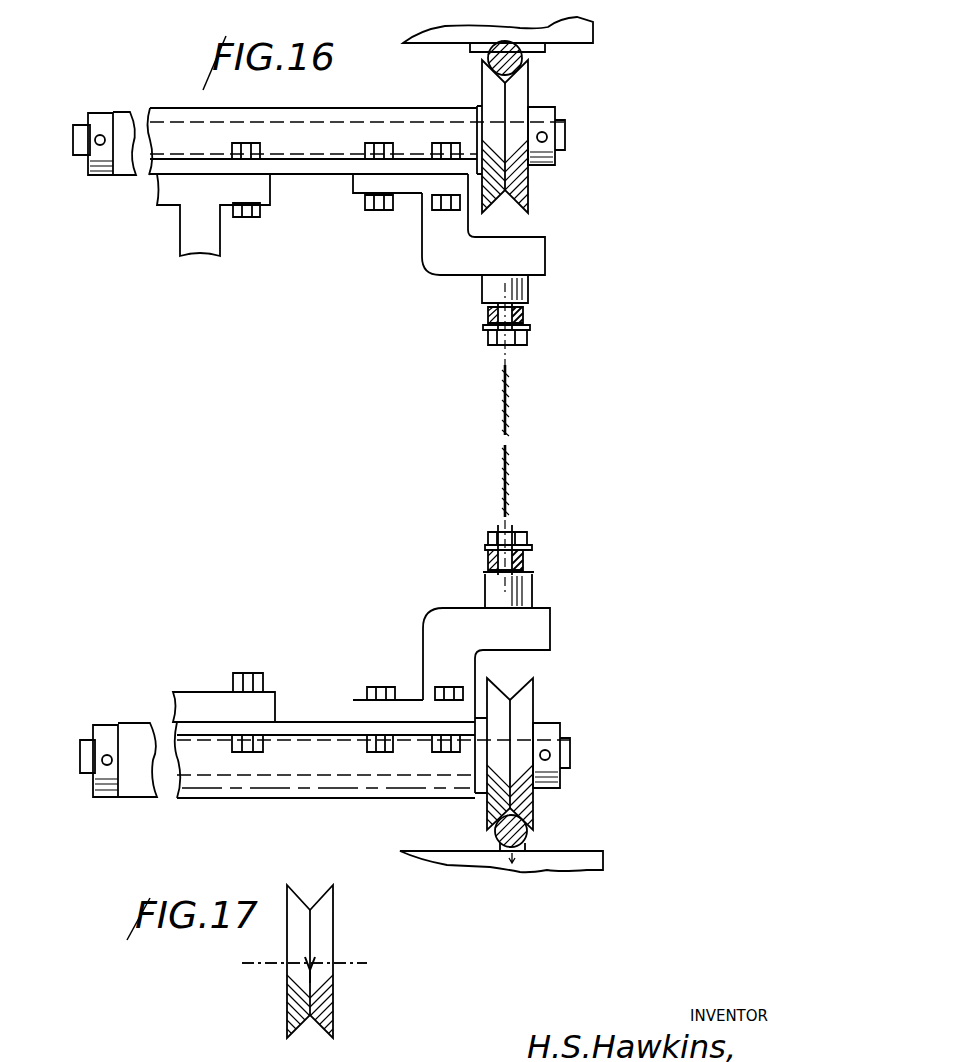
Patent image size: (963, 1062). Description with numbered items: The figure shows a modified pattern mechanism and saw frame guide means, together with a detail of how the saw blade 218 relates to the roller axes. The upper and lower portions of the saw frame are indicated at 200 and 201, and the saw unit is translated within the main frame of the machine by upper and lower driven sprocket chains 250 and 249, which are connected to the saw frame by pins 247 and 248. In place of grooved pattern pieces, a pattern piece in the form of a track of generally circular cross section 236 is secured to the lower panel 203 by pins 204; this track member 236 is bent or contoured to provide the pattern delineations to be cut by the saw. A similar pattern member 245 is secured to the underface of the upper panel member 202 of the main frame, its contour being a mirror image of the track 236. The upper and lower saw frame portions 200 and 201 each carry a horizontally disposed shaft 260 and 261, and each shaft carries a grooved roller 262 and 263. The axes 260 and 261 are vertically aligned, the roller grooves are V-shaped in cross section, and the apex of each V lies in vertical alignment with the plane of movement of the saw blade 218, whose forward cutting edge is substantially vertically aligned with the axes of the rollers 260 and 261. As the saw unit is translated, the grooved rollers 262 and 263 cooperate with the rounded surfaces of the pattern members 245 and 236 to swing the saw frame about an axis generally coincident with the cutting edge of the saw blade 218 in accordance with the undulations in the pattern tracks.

In FIG. 16, the upper portion of the saw frame 200 is at (135, 206).
In FIG. 16, the lower portion of the saw frame 201 is at (161, 703).
In FIG. 16, the upper panel member 202 is at (578, 30).
In FIG. 16, the lower panel 203 is at (580, 860).
In FIG. 16, the pins 204 is at (505, 852).
In FIG. 16, the saw blade 218 is at (507, 452).
In FIG. 17, the saw blade 218 is at (305, 975).
In FIG. 16, the track member 236 is at (520, 823).
In FIG. 16, the pattern member 245 is at (521, 71).
In FIG. 16, the pin 247 is at (492, 555).
In FIG. 16, the pin 248 is at (525, 312).
In FIG. 16, the lower driven sprocket chain 249 is at (525, 557).
In FIG. 16, the upper driven sprocket chain 250 is at (492, 310).
In FIG. 16, the shaft 260 is at (78, 141).
In FIG. 17, the shaft 260 is at (374, 962).
In FIG. 16, the shaft 261 is at (82, 748).
In FIG. 16, the grooved roller 262 is at (515, 105).
In FIG. 16, the grooved roller 263 is at (523, 707).
In FIG. 17, the grooved roller 263 is at (323, 922).